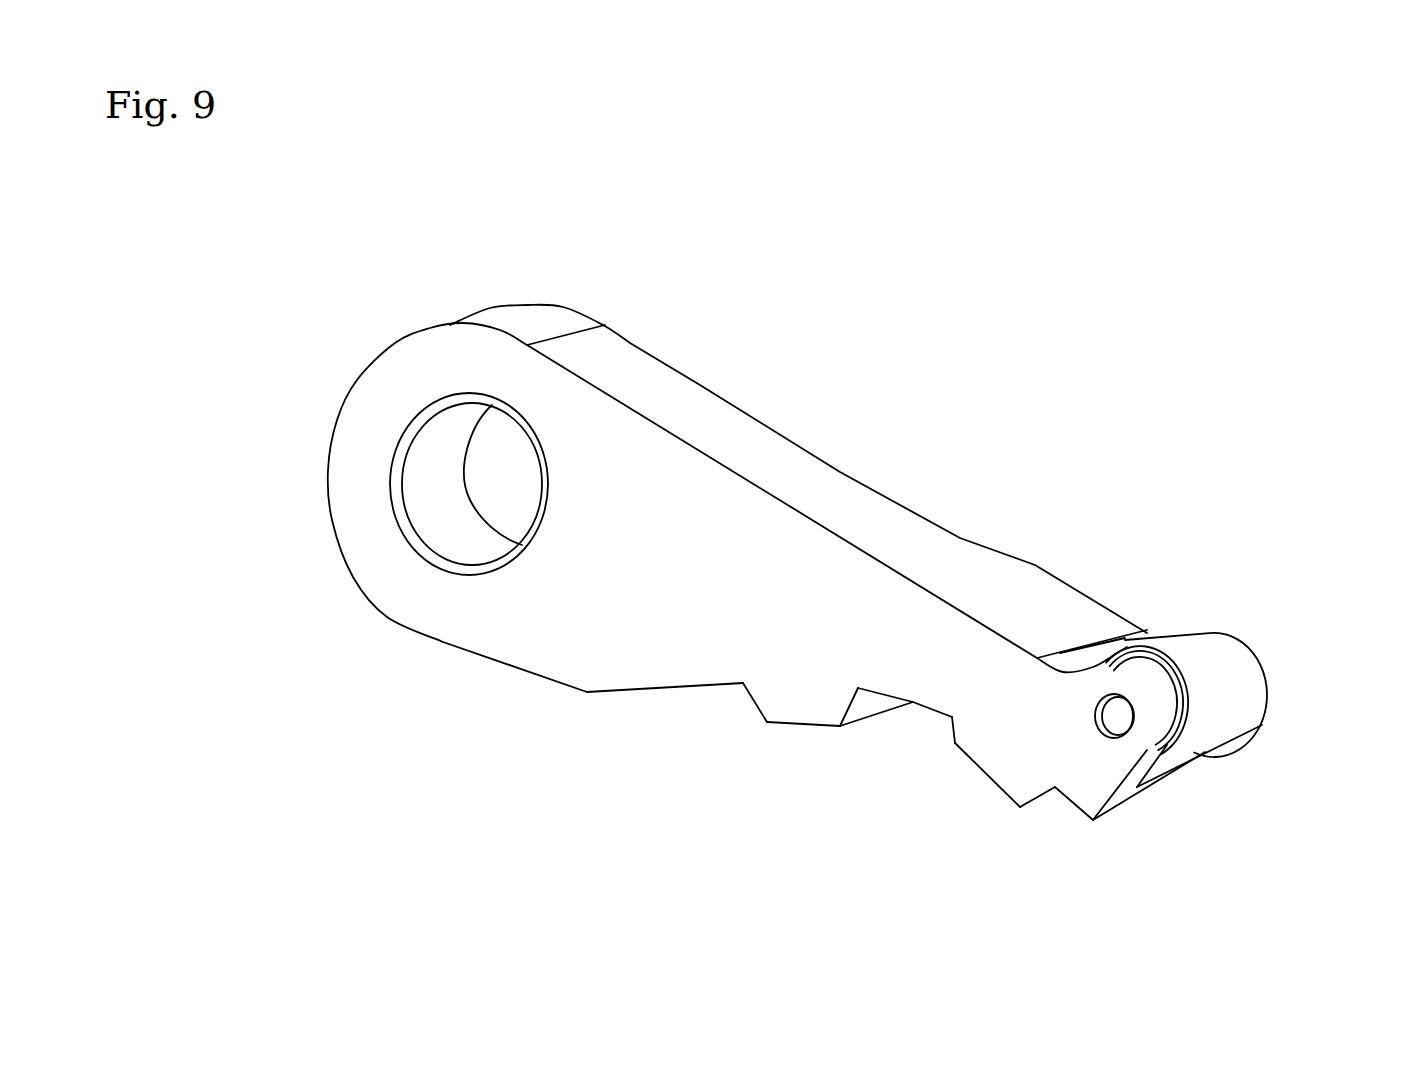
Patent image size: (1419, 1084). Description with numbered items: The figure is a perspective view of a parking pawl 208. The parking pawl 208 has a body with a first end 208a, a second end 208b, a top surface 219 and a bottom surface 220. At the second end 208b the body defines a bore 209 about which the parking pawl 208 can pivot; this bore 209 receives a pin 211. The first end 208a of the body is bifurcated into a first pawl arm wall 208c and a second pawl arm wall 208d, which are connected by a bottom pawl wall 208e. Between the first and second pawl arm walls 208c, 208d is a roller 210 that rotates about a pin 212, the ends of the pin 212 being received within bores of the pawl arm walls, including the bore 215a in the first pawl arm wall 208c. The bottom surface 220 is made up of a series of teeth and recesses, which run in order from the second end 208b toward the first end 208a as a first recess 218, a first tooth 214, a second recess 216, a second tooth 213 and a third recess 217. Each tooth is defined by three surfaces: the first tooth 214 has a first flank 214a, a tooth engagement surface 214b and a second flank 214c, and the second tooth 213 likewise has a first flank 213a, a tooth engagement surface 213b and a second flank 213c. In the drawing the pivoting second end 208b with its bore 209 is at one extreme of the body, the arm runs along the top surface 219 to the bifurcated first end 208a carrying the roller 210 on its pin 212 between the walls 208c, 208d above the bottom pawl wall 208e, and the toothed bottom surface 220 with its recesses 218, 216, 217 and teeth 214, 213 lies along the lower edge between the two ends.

The parking pawl 208 is at (807, 554).
The first end 208a is at (1265, 705).
The second end 208b is at (360, 381).
The first pawl arm wall 208c is at (1167, 718).
The second pawl arm wall 208d is at (1248, 735).
The bottom pawl wall 208e is at (1183, 775).
The bore 209 is at (547, 500).
The roller 210 is at (1213, 665).
The pin 211 is at (858, 587).
The pin 212 is at (1112, 717).
The second tooth 213 is at (973, 785).
The first flank 213a is at (955, 744).
The tooth engagement surface 213b is at (980, 777).
The second flank 213c is at (1022, 800).
The first tooth 214 is at (772, 724).
The first flank 214a is at (750, 702).
The tooth engagement surface 214b is at (789, 722).
The second flank 214c is at (860, 710).
The bore 215a is at (1112, 693).
The second recess 216 is at (915, 704).
The third recess 217 is at (1067, 800).
The first recess 218 is at (685, 687).
The top surface 219 is at (690, 415).
The bottom surface 220 is at (443, 642).